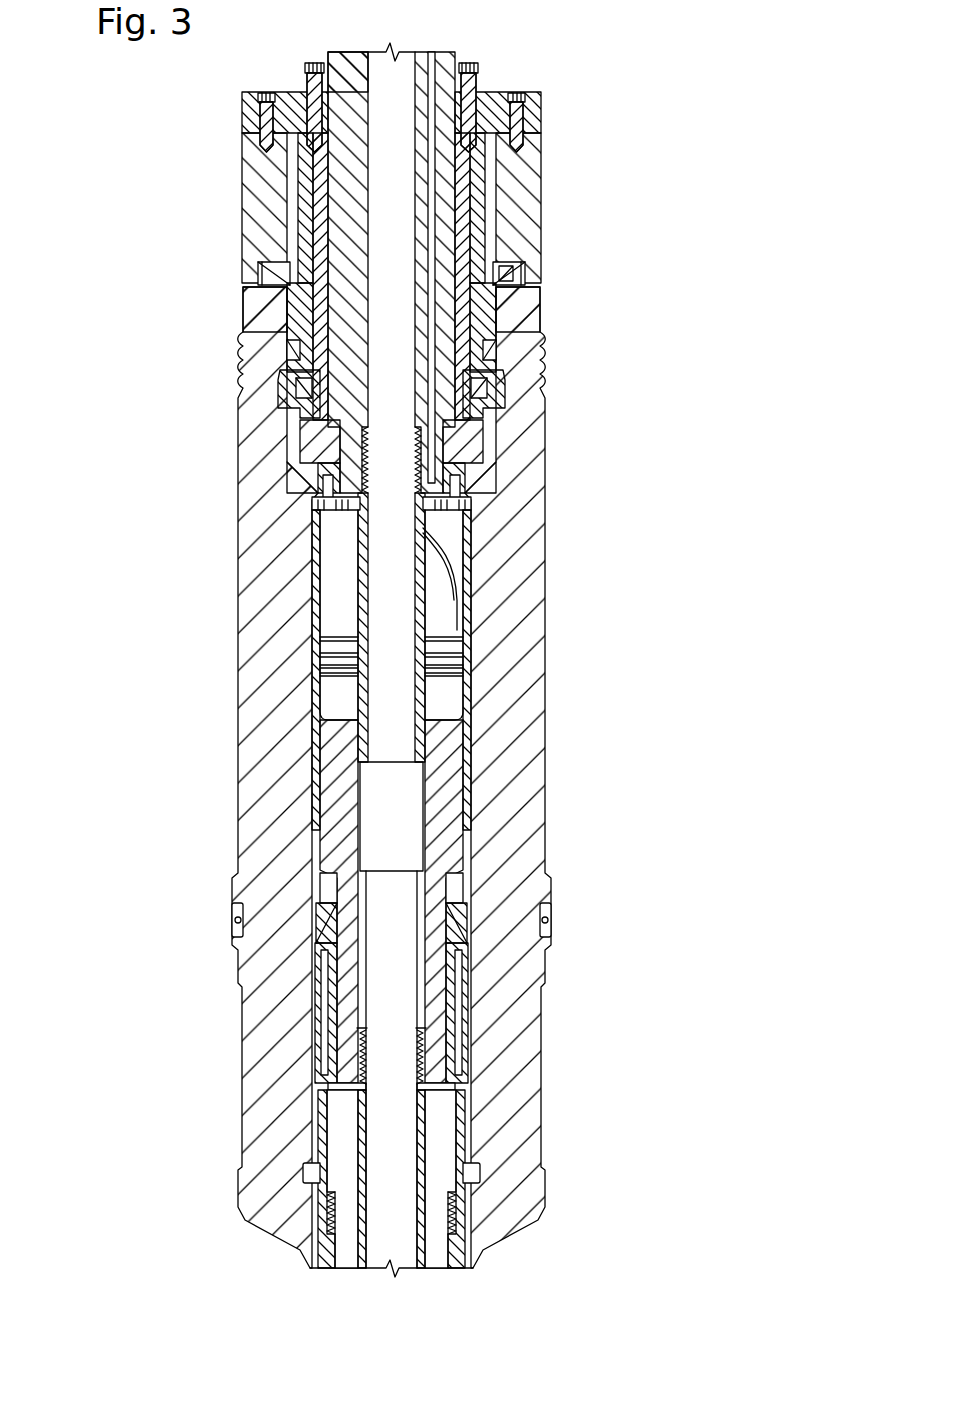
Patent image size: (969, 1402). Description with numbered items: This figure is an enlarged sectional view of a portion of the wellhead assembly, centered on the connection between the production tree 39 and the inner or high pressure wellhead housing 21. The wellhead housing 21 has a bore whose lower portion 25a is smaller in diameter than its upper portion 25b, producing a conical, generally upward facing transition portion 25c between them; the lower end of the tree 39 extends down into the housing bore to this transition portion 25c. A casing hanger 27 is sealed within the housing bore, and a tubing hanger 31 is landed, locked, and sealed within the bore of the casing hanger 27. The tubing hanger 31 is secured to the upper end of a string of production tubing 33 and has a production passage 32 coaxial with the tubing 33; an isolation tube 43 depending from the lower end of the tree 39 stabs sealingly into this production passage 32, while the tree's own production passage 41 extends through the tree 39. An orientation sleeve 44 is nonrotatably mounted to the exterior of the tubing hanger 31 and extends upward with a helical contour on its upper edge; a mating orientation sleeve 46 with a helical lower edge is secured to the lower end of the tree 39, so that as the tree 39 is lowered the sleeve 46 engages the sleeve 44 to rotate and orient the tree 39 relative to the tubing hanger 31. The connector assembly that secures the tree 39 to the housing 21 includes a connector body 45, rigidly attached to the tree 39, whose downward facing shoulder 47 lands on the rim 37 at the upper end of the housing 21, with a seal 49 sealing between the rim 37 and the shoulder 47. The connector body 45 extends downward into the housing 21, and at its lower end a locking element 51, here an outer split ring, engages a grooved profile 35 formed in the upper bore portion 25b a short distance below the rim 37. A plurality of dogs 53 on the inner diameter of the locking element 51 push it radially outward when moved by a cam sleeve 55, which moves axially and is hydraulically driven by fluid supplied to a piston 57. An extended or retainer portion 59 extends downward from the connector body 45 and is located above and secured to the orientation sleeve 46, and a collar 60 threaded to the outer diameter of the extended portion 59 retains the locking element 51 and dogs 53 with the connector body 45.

The inner wellhead housing 21 is at (527, 814).
The lower portion of bore 25a is at (318, 774).
The upper portion of bore 25b is at (298, 346).
The transition portion 25c is at (310, 478).
The casing hanger 27 is at (322, 1123).
The tubing hanger 31 is at (428, 950).
The production passage 32 is at (406, 1013).
The production tubing 33 is at (427, 1131).
The grooved profile 35 is at (292, 398).
The rim 37 is at (265, 272).
The production tree 39 is at (347, 82).
The production passage 41 is at (408, 227).
The isolation tube 43 is at (370, 620).
The orientation sleeve 44 is at (470, 645).
The connector body 45 is at (520, 203).
The mating orientation sleeve 46 is at (470, 546).
The downward facing shoulder 47 is at (520, 303).
The seal 49 is at (510, 272).
The locking element 51 is at (480, 386).
The dogs 53 is at (490, 352).
The cam sleeve 55 is at (470, 232).
The piston 57 is at (485, 181).
The extended portion 59 is at (470, 490).
The collar 60 is at (480, 430).